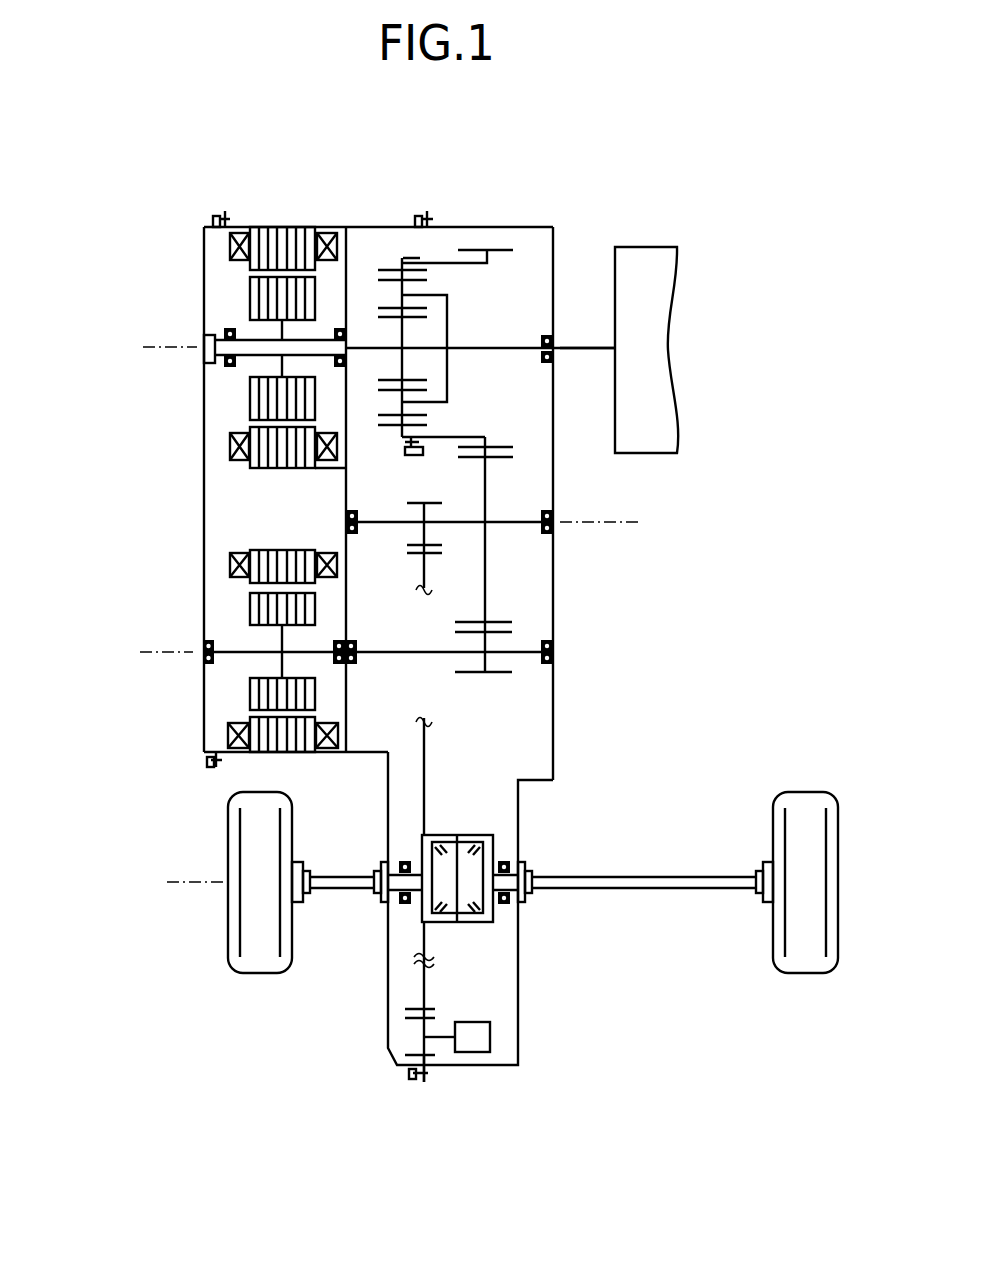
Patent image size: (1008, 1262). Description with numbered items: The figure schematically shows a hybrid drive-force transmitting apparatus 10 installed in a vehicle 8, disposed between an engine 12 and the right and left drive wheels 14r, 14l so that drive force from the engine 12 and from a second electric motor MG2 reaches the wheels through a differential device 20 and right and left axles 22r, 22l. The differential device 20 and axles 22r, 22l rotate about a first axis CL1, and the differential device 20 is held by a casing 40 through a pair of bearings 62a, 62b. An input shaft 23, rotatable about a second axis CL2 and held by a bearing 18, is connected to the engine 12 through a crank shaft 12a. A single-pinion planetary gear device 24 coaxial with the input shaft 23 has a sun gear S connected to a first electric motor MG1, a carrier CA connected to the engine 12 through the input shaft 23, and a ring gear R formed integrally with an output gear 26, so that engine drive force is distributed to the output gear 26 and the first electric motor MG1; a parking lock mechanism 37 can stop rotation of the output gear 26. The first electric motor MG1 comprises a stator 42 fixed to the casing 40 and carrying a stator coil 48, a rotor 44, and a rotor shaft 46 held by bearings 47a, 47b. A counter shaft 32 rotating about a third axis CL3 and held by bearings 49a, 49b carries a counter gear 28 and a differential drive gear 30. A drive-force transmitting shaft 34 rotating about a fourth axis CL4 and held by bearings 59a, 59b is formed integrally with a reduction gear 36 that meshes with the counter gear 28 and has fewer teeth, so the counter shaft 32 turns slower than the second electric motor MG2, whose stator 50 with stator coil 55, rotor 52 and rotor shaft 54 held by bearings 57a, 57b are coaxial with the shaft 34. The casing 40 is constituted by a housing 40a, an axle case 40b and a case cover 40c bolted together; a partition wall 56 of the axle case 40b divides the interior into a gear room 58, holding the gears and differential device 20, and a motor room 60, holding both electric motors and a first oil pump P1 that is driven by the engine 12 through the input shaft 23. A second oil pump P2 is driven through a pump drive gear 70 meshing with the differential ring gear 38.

The vehicle 8 is at (617, 113).
The drive-force transmitting apparatus 10 is at (335, 162).
The engine 12 is at (665, 446).
The crank shaft 12a is at (578, 347).
The left drive wheel 14l is at (262, 962).
The right drive wheel 14r is at (805, 962).
The bearing 18 is at (546, 360).
The differential device 20 is at (522, 924).
The left axle 22l is at (340, 877).
The right axle 22r is at (649, 877).
The input shaft 23 is at (495, 347).
The planetary gear device 24 is at (379, 250).
The output gear 26 is at (462, 251).
The counter gear 28 is at (458, 455).
The differential drive gear 30 is at (441, 503).
The counter shaft 32 is at (468, 527).
The drive-force transmitting shaft 34 is at (381, 655).
The reduction gear 36 is at (476, 675).
The parking lock mechanism 37 is at (406, 455).
The differential ring gear 38 is at (409, 553).
The casing 40 is at (520, 226).
The housing 40a is at (556, 634).
The axle case 40b is at (366, 753).
The case cover 40c is at (204, 437).
The stator 42 is at (278, 243).
The rotor 44 is at (262, 305).
The rotor shaft 46 is at (246, 362).
The bearing 47a is at (227, 368).
The bearing 47b is at (347, 331).
The stator coil 48 is at (237, 240).
The bearing 49a is at (344, 528).
The bearing 49b is at (556, 530).
The stator 50 is at (275, 742).
The rotor 52 is at (258, 697).
The rotor shaft 54 is at (233, 649).
The stator coil 55 is at (230, 736).
The partition wall 56 is at (345, 493).
The bearing 57a is at (204, 646).
The bearing 57b is at (347, 644).
The gear room 58 is at (520, 491).
The bearing 59a is at (358, 642).
The bearing 59b is at (556, 655).
The motor room 60 is at (238, 498).
The bearing 62a is at (407, 897).
The bearing 62b is at (513, 907).
The pump drive gear 70 is at (433, 1058).
The first electric motor MG1 is at (216, 274).
The second electric motor MG2 is at (216, 596).
The first oil pump P1 is at (207, 343).
The second oil pump P2 is at (457, 1037).
The sun gear S is at (390, 380).
The carrier CA is at (437, 295).
The ring gear R is at (386, 428).
The first axis CL1 is at (173, 890).
The second axis CL2 is at (157, 352).
The third axis CL3 is at (612, 527).
The fourth axis CL4 is at (151, 658).